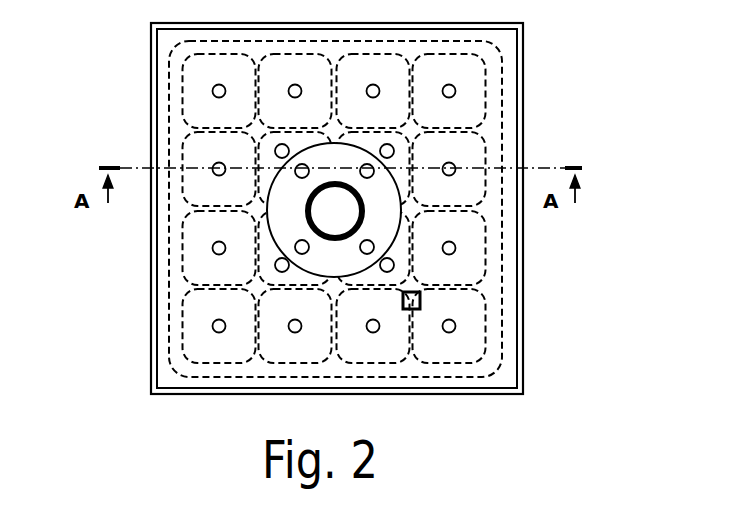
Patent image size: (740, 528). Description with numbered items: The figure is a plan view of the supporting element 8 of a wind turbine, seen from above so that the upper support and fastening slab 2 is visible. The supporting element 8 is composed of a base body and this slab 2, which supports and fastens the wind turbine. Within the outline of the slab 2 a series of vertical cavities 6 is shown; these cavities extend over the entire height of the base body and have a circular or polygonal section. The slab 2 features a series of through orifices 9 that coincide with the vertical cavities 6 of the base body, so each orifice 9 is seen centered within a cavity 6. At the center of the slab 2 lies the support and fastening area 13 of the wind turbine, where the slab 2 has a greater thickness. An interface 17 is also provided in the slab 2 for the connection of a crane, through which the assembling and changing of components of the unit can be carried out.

The slab 2 is at (523, 93).
The vertical cavities 6 is at (488, 312).
The supporting element 8 is at (144, 320).
The orifices 9 is at (214, 166).
The support and fastening area 13 is at (285, 212).
The interface 17 is at (413, 311).